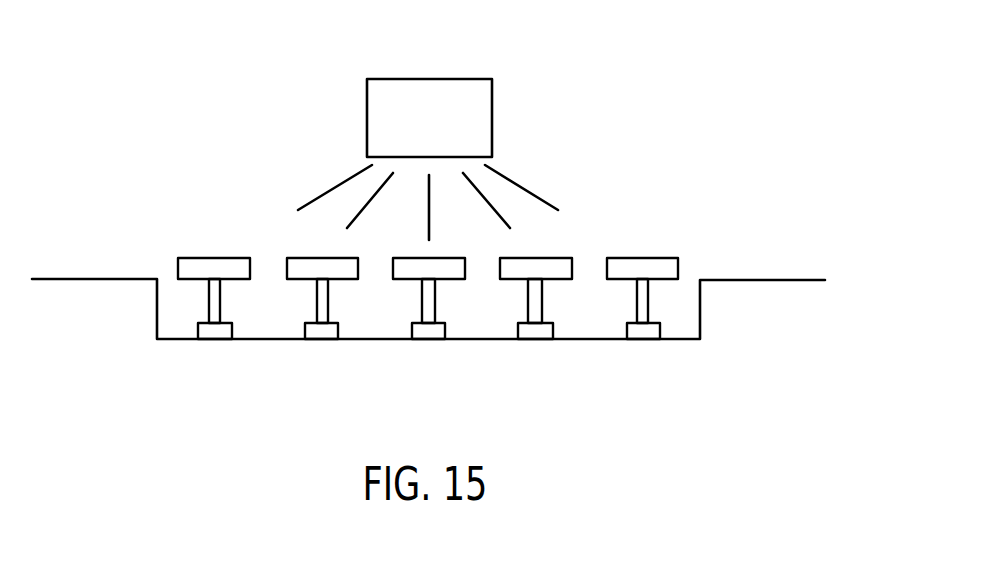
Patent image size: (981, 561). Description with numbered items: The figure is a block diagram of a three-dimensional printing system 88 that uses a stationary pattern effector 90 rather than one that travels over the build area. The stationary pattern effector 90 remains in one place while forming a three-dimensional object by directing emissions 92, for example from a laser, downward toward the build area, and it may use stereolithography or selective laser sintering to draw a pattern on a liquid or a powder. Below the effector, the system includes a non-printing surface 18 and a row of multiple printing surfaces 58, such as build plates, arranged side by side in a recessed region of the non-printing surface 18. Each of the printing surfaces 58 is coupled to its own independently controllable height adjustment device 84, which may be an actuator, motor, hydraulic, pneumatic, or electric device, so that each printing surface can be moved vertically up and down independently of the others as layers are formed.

The 3D printing system 88 is at (199, 91).
The stationary pattern effector 90 is at (431, 78).
The emissions 92 is at (370, 202).
The non-printing surface 18 is at (762, 279).
The printing surfaces 58 is at (323, 258).
The independently controllable height adjustment device 84 is at (317, 298).